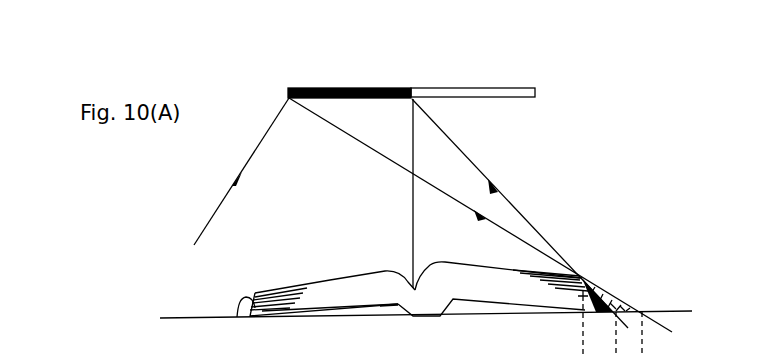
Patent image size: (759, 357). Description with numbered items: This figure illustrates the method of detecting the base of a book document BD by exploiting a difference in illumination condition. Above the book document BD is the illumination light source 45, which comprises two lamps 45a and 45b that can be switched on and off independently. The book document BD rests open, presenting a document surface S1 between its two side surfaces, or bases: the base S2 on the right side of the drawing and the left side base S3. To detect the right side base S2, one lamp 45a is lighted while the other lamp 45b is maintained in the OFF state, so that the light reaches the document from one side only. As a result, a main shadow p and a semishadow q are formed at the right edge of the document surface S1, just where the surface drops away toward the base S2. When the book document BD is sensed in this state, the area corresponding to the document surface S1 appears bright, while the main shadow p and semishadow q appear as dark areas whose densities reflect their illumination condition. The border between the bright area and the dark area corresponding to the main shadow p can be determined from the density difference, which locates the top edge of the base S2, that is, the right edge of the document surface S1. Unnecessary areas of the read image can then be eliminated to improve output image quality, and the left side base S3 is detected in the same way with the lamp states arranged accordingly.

The illumination light source 45 is at (411, 54).
The right side lamp 45a is at (381, 88).
The left side lamp 45b is at (438, 90).
The book document BD is at (419, 267).
The document surface S1 is at (453, 258).
The base S2 is at (583, 297).
The left side base S3 is at (238, 317).
The main shadow p is at (589, 297).
The semishadow q is at (612, 300).